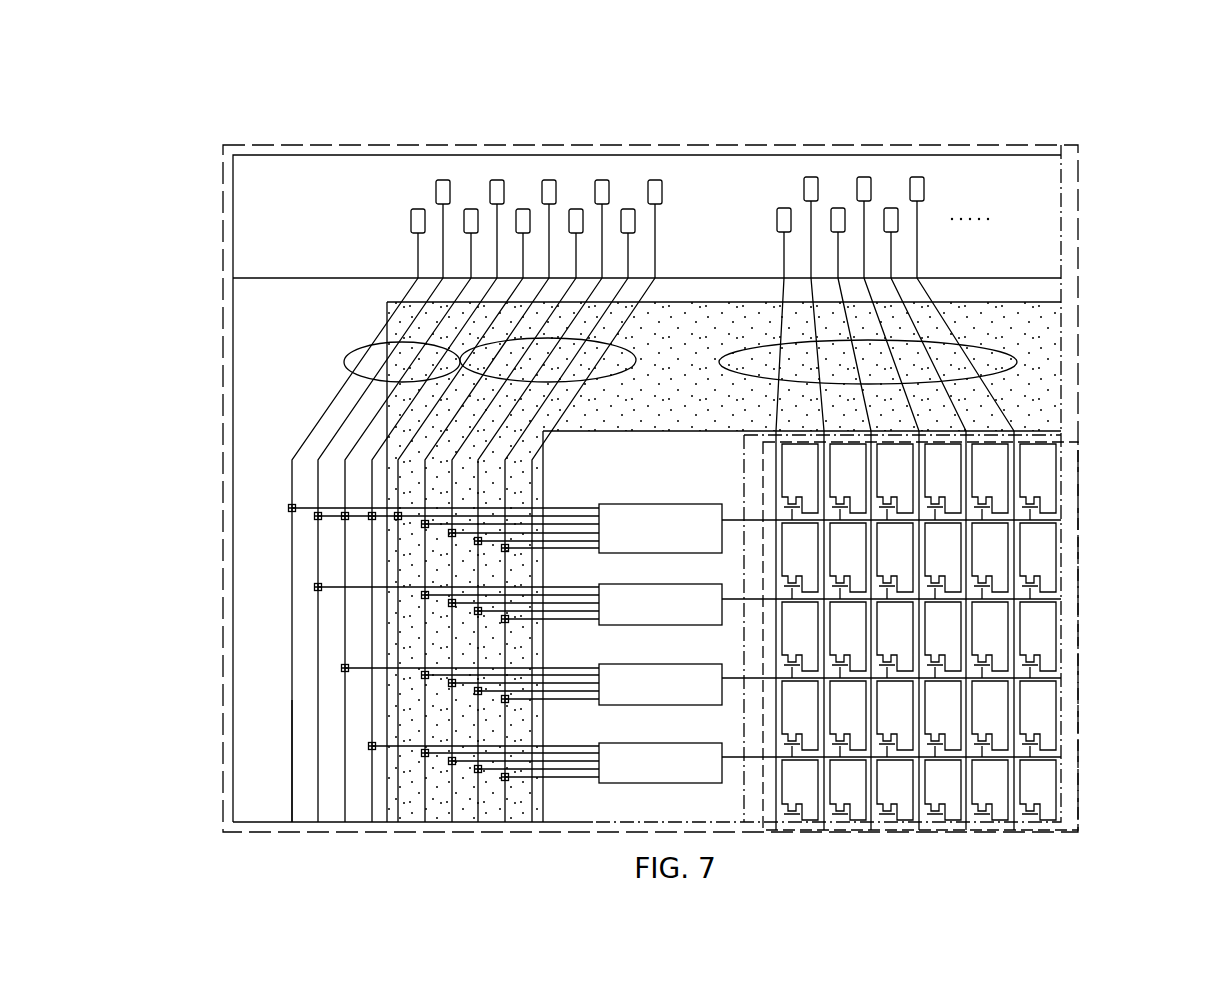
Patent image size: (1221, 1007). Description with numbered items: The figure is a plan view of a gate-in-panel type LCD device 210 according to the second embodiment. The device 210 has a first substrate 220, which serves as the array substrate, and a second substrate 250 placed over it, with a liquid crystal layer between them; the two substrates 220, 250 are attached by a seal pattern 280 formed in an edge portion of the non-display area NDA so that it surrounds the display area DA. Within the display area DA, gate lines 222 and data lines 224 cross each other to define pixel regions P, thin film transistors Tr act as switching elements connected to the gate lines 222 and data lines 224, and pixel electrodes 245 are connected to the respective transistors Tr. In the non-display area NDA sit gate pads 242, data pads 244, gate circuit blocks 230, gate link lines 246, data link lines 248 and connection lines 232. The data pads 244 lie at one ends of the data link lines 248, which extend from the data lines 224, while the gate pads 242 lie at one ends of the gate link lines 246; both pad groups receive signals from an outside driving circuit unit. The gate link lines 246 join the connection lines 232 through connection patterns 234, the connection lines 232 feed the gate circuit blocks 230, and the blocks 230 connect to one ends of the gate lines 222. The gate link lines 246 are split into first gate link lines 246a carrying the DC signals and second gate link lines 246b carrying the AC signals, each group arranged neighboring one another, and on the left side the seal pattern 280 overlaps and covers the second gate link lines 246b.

The GIP type LCD device 210 is at (1019, 132).
The first substrate 220 is at (375, 142).
The gate lines 222 is at (750, 600).
The data lines 224 is at (1050, 464).
The gate circuit blocks 230 is at (636, 504).
The connection lines 232 is at (591, 510).
The connection patterns 234 is at (288, 507).
The gate pads 242 is at (665, 141).
The data pads 244 is at (919, 176).
The pixel electrodes 245 is at (798, 432).
The gate link lines 246 is at (420, 282).
The first gate link lines 246a is at (343, 347).
The second gate link lines 246b is at (445, 295).
The data link lines 248 is at (978, 346).
The second substrate 250 is at (723, 272).
The seal pattern 280 is at (288, 750).
The thin film transistors Tr is at (772, 498).
The pixel regions P is at (1056, 500).
The non-display area NDA is at (1078, 277).
The display area DA is at (1080, 655).